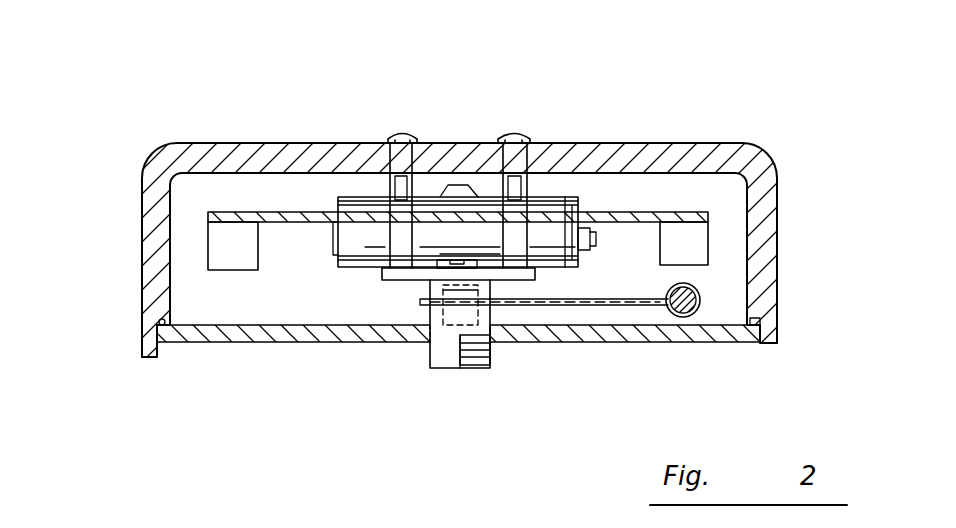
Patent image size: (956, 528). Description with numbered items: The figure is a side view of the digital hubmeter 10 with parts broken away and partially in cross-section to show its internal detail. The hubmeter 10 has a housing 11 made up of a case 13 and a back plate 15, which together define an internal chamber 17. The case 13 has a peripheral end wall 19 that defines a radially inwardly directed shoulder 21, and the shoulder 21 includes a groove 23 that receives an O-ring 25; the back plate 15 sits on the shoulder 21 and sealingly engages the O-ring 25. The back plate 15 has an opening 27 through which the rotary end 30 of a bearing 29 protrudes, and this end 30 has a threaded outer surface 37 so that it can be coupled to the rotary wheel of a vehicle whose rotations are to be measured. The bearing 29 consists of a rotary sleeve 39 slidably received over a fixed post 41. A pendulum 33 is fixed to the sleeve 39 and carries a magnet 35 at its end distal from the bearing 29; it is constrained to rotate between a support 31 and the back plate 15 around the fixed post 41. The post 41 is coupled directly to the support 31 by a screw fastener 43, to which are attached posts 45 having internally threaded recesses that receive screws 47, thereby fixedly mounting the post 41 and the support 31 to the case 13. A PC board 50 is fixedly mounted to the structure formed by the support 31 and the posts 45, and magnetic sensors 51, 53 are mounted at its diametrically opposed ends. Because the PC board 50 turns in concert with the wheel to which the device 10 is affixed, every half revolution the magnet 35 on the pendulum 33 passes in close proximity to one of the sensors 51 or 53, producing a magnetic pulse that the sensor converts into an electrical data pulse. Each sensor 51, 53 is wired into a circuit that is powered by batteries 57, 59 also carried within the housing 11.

The hubmeter 10 is at (165, 85).
The housing 11 is at (157, 152).
The case 13 is at (142, 208).
The back plate 15 is at (625, 343).
The internal chamber 17 is at (285, 195).
The peripheral end wall 19 is at (152, 358).
The shoulder 21 is at (740, 343).
The groove 23 is at (762, 319).
The O-ring 25 is at (158, 321).
The opening 27 is at (445, 345).
The bearing 29 is at (500, 353).
The rotary end 30 is at (470, 365).
The support 31 is at (390, 278).
The pendulum 33 is at (545, 306).
The magnet 35 is at (672, 288).
The threaded outer surface 37 is at (490, 352).
The rotary sleeve 39 is at (433, 325).
The fixed post 41 is at (445, 290).
The screw fastener 43 is at (562, 228).
The posts 45 is at (410, 183).
The screws 47 is at (401, 131).
The PC board 50 is at (648, 213).
The magnetic sensor 51 is at (213, 242).
The magnetic sensor 53 is at (708, 245).
The battery 57 is at (391, 249).
The battery 59 is at (345, 255).